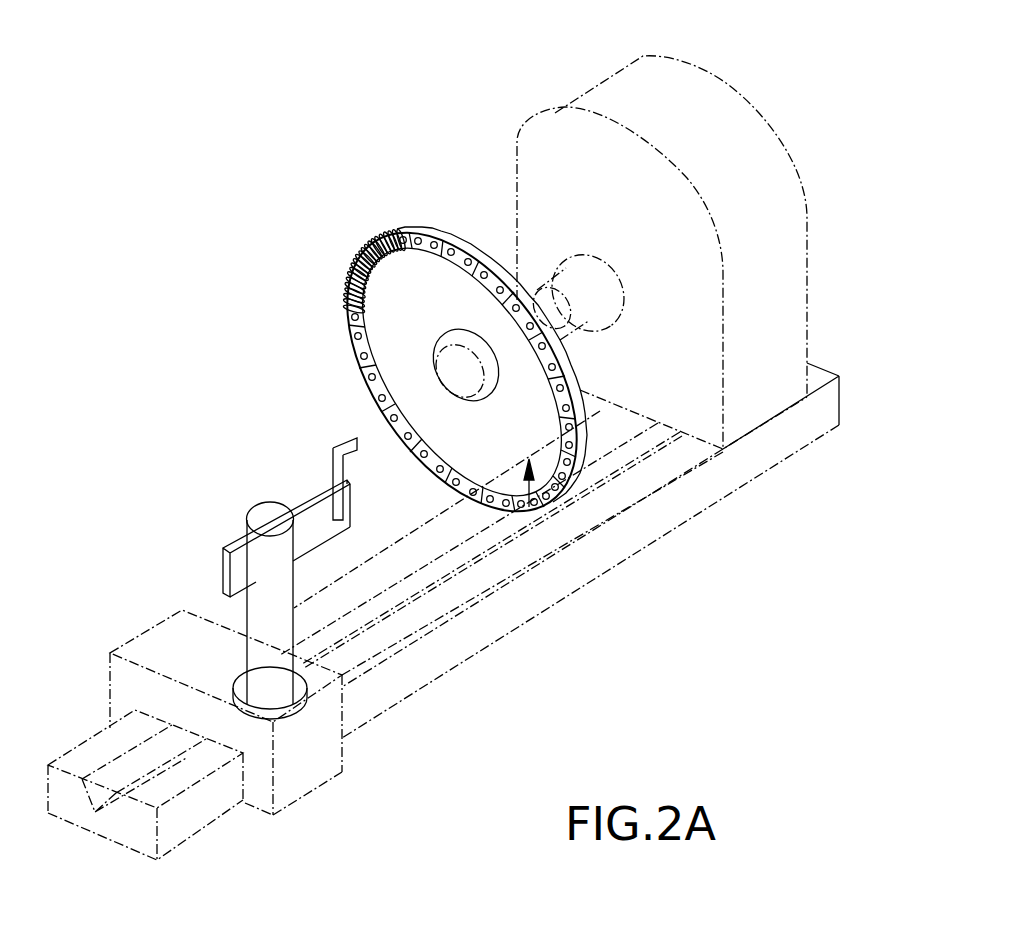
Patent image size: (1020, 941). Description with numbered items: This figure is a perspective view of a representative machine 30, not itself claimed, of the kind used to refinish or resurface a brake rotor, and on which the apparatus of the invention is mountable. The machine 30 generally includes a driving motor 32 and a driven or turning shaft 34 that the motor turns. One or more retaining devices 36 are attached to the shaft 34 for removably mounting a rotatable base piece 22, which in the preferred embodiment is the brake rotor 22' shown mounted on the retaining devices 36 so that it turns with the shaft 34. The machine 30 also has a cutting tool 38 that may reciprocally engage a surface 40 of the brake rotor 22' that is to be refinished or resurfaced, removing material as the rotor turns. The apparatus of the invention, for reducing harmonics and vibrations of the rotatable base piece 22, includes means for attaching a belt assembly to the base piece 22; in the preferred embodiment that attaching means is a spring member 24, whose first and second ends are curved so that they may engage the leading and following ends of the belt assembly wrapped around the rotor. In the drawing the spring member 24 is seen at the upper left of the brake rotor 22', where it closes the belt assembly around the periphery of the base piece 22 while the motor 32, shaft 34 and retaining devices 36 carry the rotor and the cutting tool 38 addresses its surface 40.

The base piece 22 is at (462, 413).
The brake rotor 22' is at (461, 360).
The spring member 24 is at (357, 262).
The machine 30 is at (824, 211).
The driving motor 32 is at (653, 80).
The turning shaft 34 is at (572, 302).
The retaining device 36 is at (460, 385).
The cutting tool 38 is at (337, 446).
The surface 40 is at (378, 345).